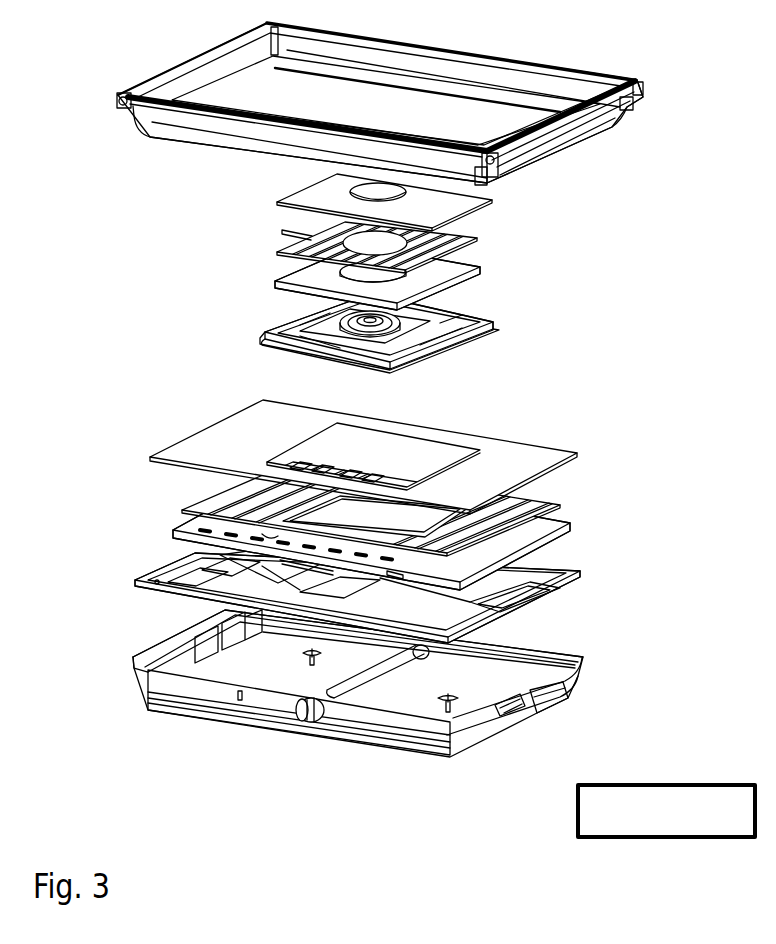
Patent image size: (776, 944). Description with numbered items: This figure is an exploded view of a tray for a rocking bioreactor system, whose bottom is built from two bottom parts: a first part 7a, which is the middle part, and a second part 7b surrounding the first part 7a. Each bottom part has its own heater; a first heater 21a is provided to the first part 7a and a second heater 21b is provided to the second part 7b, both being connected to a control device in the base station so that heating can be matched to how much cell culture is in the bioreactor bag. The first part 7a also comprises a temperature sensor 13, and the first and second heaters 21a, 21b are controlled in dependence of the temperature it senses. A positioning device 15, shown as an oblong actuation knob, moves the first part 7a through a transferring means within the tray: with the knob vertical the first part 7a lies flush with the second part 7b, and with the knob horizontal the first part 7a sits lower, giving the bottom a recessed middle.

The first part 7a is at (363, 270).
The second part 7b is at (388, 506).
The first heater 21a is at (478, 236).
The second heater 21b is at (560, 505).
The temperature sensor 13 is at (400, 322).
The positioning device 15 is at (320, 714).